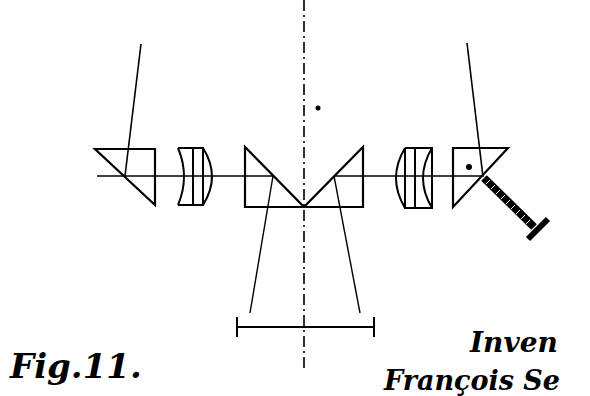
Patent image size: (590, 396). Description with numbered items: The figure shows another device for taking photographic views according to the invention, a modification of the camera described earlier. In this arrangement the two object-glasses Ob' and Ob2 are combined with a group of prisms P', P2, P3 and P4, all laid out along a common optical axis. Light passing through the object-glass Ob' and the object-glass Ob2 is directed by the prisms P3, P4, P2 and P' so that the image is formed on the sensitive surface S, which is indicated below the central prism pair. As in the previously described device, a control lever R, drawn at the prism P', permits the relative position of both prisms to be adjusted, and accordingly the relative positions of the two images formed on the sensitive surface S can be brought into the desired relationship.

The prism P3 is at (145, 185).
The prism P4 is at (248, 195).
The prism P2 is at (348, 198).
The prism P' is at (500, 125).
The control lever R is at (523, 207).
The sensitive surface S is at (272, 327).
The object-glass Ob' is at (197, 159).
The object-glass Ob2 is at (417, 163).